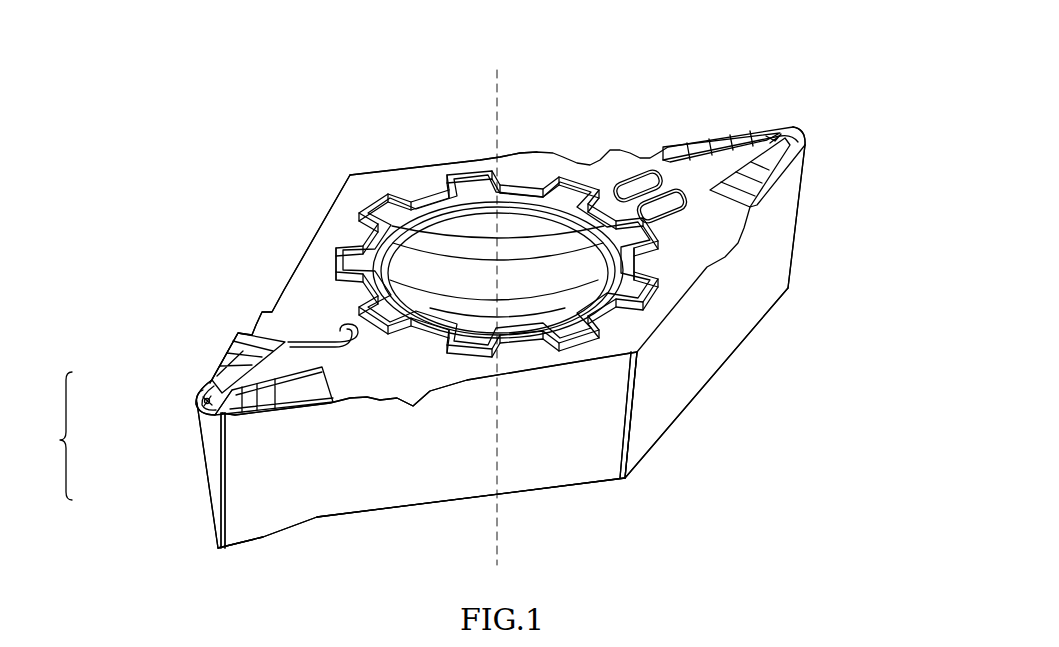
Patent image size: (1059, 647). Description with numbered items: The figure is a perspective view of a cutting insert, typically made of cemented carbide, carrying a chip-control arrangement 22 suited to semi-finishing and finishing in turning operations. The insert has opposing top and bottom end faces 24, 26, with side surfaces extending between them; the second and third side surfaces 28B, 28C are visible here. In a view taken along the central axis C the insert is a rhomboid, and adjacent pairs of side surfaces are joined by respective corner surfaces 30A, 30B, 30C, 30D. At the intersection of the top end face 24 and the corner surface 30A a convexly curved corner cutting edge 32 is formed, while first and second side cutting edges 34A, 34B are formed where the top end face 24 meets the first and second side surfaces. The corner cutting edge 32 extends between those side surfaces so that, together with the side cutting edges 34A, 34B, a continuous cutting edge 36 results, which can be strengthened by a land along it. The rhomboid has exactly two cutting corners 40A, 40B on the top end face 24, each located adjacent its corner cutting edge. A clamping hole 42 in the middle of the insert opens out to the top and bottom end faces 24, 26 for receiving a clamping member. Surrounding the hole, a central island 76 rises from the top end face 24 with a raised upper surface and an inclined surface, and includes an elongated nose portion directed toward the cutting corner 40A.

The central axis C is at (499, 301).
The chip-control arrangement 22 is at (771, 108).
The top end face 24 is at (299, 282).
The bottom end face 26 is at (574, 510).
The second side surface 28B is at (378, 468).
The third side surface 28C is at (697, 337).
The corner surface 30A is at (212, 452).
The corner surface 30B is at (627, 390).
The corner surface 30C is at (804, 167).
The corner surface 30D is at (358, 177).
The corner cutting edge 32 is at (197, 406).
The first side cutting edge 34A is at (202, 375).
The second side cutting edge 34B is at (207, 440).
The continuous cutting edge 36 is at (49, 436).
The cutting corner 40A is at (212, 349).
The cutting corner 40B is at (815, 123).
The clamping hole 42 is at (520, 212).
The central island 76 is at (436, 378).